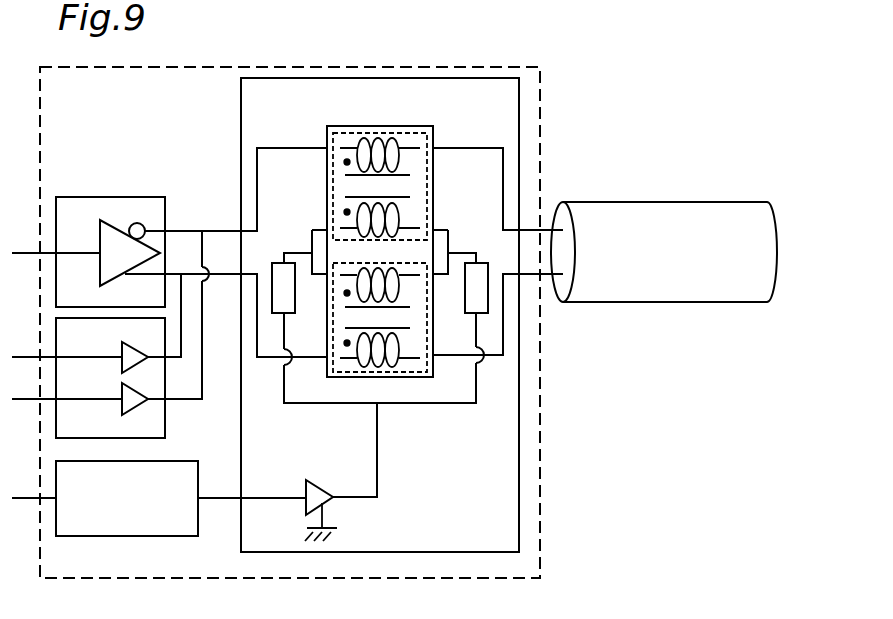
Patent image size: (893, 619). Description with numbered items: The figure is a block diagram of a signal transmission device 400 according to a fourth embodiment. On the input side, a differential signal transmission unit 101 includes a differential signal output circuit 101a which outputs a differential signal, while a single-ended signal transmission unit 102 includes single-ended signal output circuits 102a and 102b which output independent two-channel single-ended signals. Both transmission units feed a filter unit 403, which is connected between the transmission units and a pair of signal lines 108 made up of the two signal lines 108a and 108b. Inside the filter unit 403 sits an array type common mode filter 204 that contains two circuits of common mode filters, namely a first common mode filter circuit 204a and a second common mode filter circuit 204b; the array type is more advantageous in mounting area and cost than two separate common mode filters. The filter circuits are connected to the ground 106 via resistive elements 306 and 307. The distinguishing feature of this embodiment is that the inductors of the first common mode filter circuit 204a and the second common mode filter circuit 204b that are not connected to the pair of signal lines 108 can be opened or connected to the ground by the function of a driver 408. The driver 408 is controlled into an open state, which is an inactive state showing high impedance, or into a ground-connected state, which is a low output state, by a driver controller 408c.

The signal transmission device 400 is at (468, 60).
The filter unit 403 is at (232, 118).
The differential signal transmission unit 101 is at (107, 214).
The differential signal output circuit 101a is at (107, 222).
The single-ended signal transmission unit 102 is at (148, 389).
The single-ended signal output circuit 102a is at (135, 343).
The single-ended signal output circuit 102b is at (135, 408).
The array type common mode filter 204 is at (353, 268).
The first common mode filter circuit 204a is at (412, 377).
The second common mode filter circuit 204b is at (399, 127).
The resistive element 306 is at (283, 252).
The resistive element 307 is at (483, 262).
The pair of signal lines 108 is at (722, 295).
The signal line 108a is at (543, 273).
The signal line 108b is at (543, 223).
The driver 408 is at (322, 479).
The driver controller 408c is at (172, 537).
The ground 106 is at (327, 535).